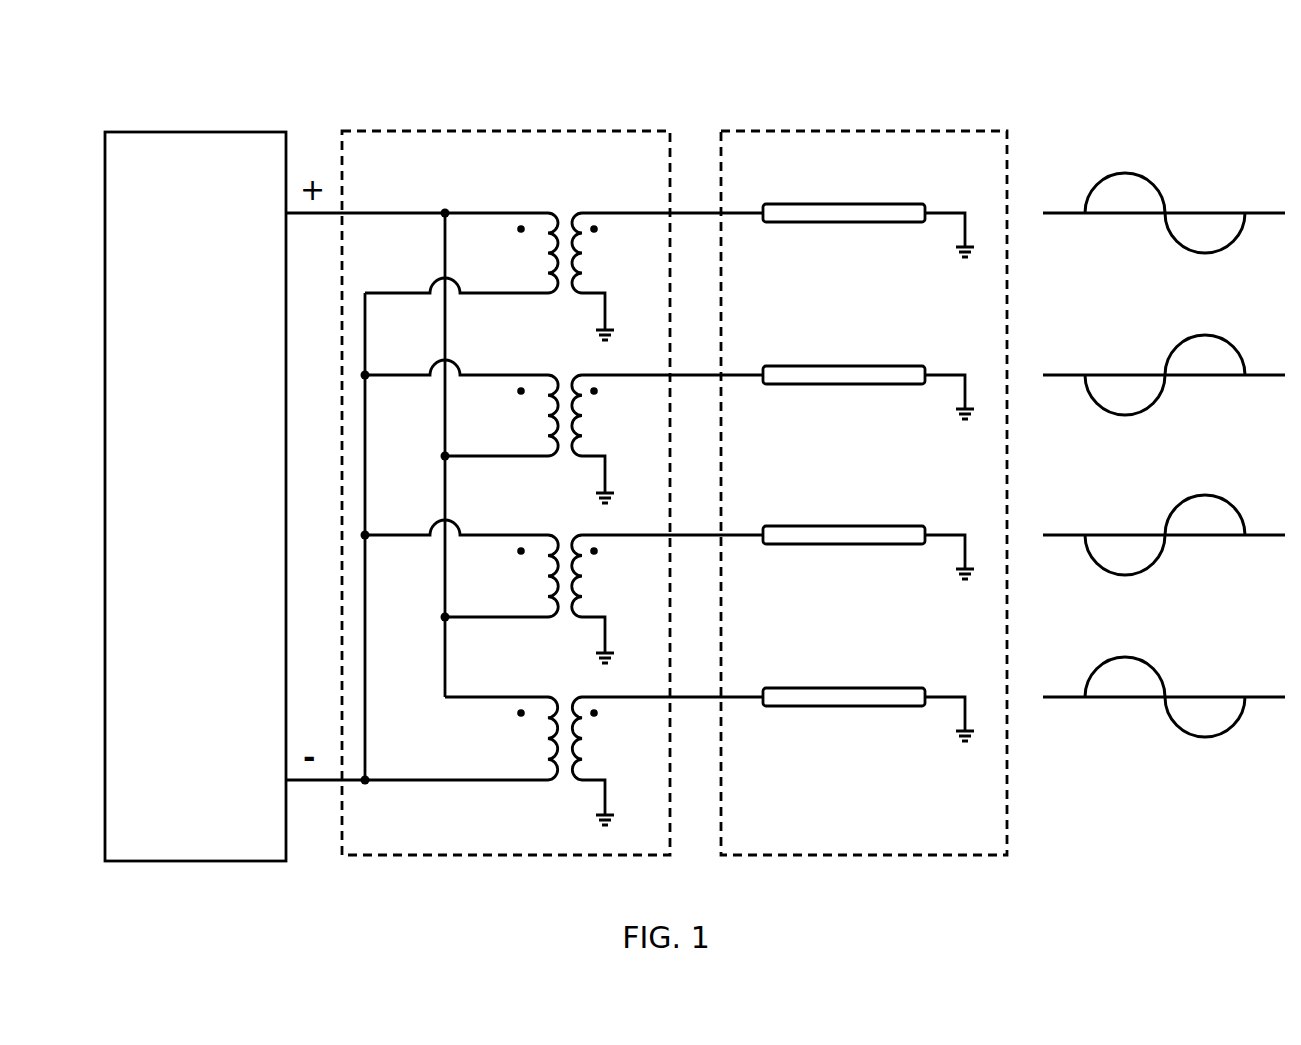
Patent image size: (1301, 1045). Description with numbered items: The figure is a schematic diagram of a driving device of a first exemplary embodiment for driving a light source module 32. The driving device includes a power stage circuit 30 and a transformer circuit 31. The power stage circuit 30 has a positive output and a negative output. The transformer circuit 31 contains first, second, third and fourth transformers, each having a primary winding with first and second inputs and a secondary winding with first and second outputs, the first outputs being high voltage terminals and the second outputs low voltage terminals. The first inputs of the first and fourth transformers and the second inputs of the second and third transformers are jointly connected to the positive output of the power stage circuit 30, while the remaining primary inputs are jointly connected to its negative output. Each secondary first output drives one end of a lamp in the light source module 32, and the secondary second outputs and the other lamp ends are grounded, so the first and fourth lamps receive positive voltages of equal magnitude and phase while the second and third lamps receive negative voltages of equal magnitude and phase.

The power stage circuit 30 is at (163, 132).
The transformer circuit 31 is at (484, 131).
The light source module 32 is at (845, 131).